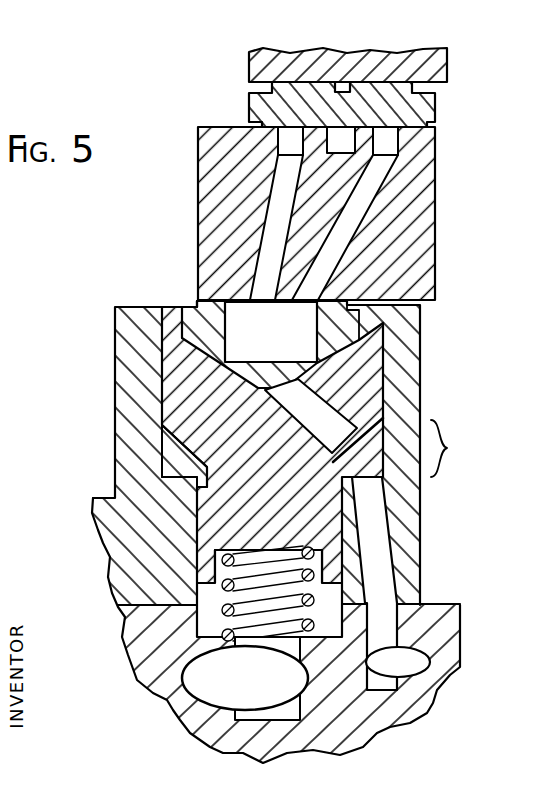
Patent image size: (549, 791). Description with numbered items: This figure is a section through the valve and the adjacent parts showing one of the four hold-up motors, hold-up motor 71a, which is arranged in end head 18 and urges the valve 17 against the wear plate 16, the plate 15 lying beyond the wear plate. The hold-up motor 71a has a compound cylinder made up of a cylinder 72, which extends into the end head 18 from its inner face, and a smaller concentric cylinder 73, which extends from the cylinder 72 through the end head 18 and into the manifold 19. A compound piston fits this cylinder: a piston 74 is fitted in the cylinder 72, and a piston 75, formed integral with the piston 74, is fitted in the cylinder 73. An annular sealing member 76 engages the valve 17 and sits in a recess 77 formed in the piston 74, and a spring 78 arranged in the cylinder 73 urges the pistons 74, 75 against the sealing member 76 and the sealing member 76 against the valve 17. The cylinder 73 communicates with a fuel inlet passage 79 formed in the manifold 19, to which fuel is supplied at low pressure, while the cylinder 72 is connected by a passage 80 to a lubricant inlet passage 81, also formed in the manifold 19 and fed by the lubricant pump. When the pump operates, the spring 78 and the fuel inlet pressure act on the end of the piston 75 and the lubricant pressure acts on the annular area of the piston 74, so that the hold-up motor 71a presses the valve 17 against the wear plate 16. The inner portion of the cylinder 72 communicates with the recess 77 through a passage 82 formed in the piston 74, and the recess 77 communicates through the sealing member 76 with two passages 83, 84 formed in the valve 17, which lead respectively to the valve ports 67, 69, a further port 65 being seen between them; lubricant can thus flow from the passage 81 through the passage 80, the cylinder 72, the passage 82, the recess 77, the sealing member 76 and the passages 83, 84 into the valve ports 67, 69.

The cover plate 15 is at (433, 68).
The wear plate 16 is at (422, 112).
The valve 17 is at (318, 213).
The end head 18 is at (413, 337).
The manifold 19 is at (420, 713).
The port 65 is at (343, 142).
The valve port 67 is at (290, 137).
The valve port 69 is at (392, 143).
The passage 83 is at (278, 217).
The passage 84 is at (377, 182).
The annular sealing member 76 is at (197, 305).
The piston 74 is at (172, 350).
The recess 77 is at (279, 371).
The cylinder 72 is at (172, 462).
The piston 75 is at (225, 445).
The passage 82 is at (337, 437).
The hold-up motor 71a is at (456, 448).
The cylinder 73 is at (207, 595).
The passage 80 is at (385, 578).
The spring 78 is at (280, 630).
The fuel inlet passage 79 is at (212, 688).
The lubricant inlet passage 81 is at (417, 665).